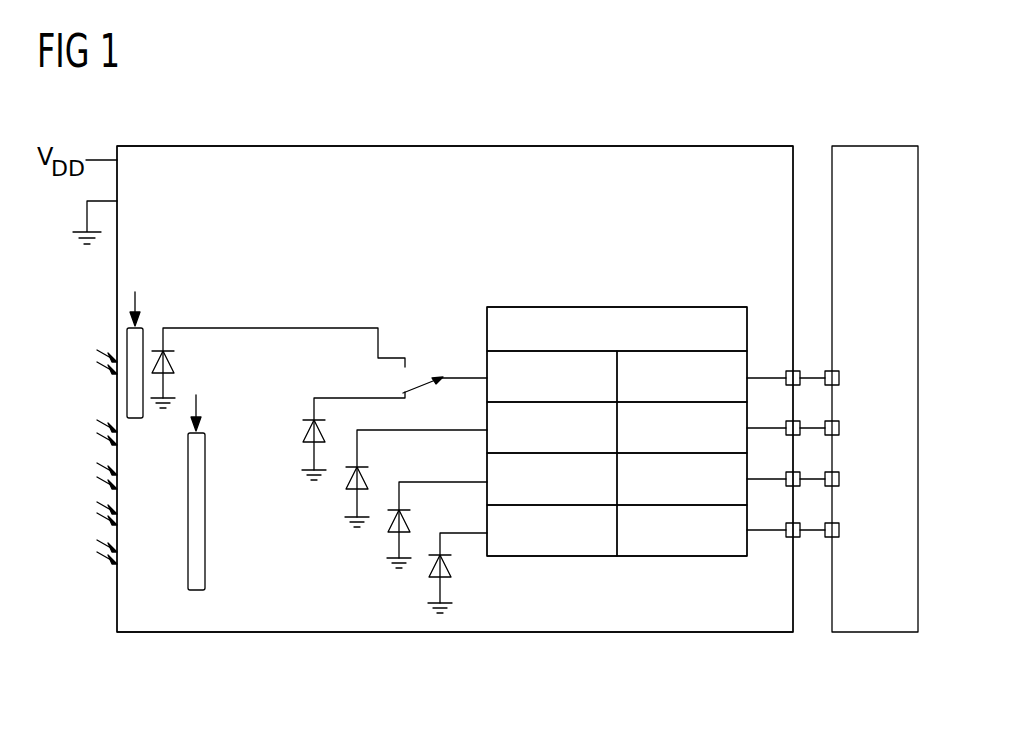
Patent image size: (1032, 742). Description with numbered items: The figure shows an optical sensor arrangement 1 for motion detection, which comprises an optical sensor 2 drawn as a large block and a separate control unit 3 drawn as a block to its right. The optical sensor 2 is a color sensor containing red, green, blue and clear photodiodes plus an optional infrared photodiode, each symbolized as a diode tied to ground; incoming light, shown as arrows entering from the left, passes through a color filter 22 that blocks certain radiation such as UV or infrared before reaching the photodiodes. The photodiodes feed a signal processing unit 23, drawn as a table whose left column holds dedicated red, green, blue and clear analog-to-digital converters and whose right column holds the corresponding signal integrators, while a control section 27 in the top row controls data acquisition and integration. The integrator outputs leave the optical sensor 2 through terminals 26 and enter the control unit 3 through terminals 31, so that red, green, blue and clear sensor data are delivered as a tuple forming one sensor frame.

The optical sensor arrangement 1 is at (708, 131).
The optical sensor 2 is at (525, 634).
The control unit 3 is at (875, 634).
The color filter 22 is at (137, 419).
The signal processing unit 23 is at (550, 307).
The control section 27 is at (631, 348).
The terminals 26 is at (790, 371).
The terminals 31 is at (840, 378).